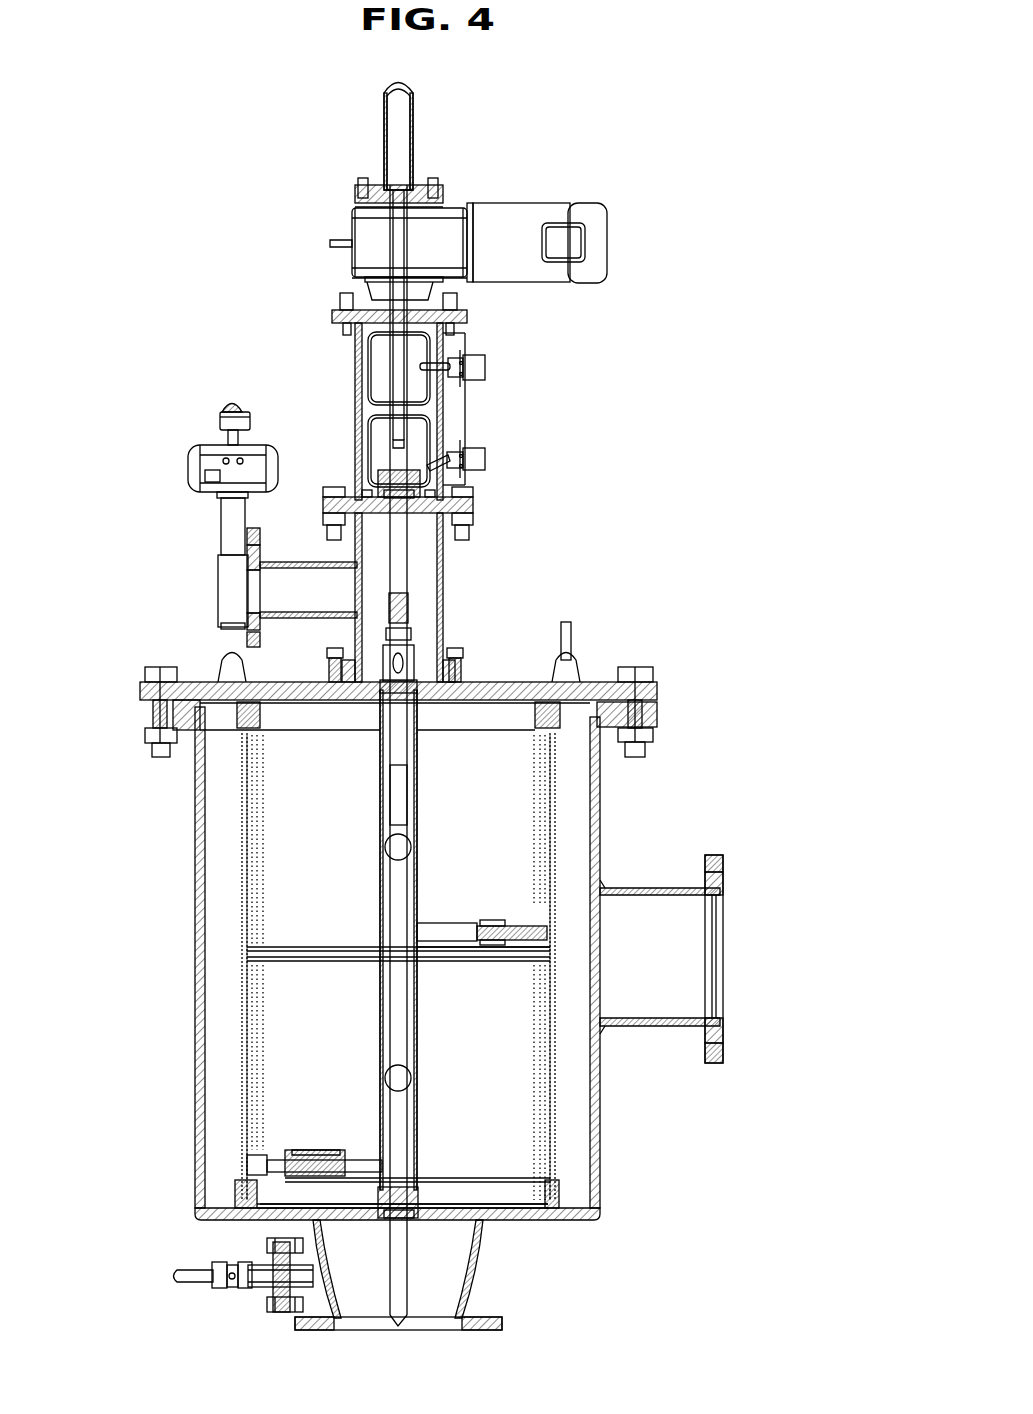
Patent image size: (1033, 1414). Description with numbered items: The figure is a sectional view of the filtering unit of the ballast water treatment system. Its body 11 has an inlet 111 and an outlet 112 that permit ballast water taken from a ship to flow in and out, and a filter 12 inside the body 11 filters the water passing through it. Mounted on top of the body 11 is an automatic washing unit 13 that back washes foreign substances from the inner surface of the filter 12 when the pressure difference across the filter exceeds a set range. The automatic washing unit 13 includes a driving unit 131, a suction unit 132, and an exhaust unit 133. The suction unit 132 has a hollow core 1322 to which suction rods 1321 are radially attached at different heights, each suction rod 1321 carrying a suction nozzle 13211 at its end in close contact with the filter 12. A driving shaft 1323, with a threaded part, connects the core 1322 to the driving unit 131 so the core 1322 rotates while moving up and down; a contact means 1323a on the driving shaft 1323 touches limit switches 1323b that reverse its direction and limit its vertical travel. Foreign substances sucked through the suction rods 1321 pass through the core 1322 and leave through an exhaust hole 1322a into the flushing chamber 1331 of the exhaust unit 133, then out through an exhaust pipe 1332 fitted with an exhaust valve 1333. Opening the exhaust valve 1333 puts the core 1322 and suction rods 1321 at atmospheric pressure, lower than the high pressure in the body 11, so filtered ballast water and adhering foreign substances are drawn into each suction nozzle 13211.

The body 11 is at (655, 782).
The inlet 111 is at (475, 1272).
The outlet 112 is at (665, 888).
The filter 12 is at (553, 1103).
The automatic washing unit 13 is at (300, 393).
The driving unit 131 is at (607, 233).
The suction unit 132 is at (683, 562).
The suction rod 1321 is at (455, 918).
The suction nozzle 13211 is at (512, 918).
The core 1322 is at (420, 761).
The exhaust hole 1322a is at (412, 628).
The driving shaft 1323 is at (492, 505).
The contact means 1323a is at (430, 477).
The limit switch 1323b is at (482, 452).
The exhaust unit 133 is at (96, 500).
The flushing chamber 1331 is at (270, 652).
The exhaust pipe 1332 is at (293, 561).
The exhaust valve 1333 is at (182, 480).